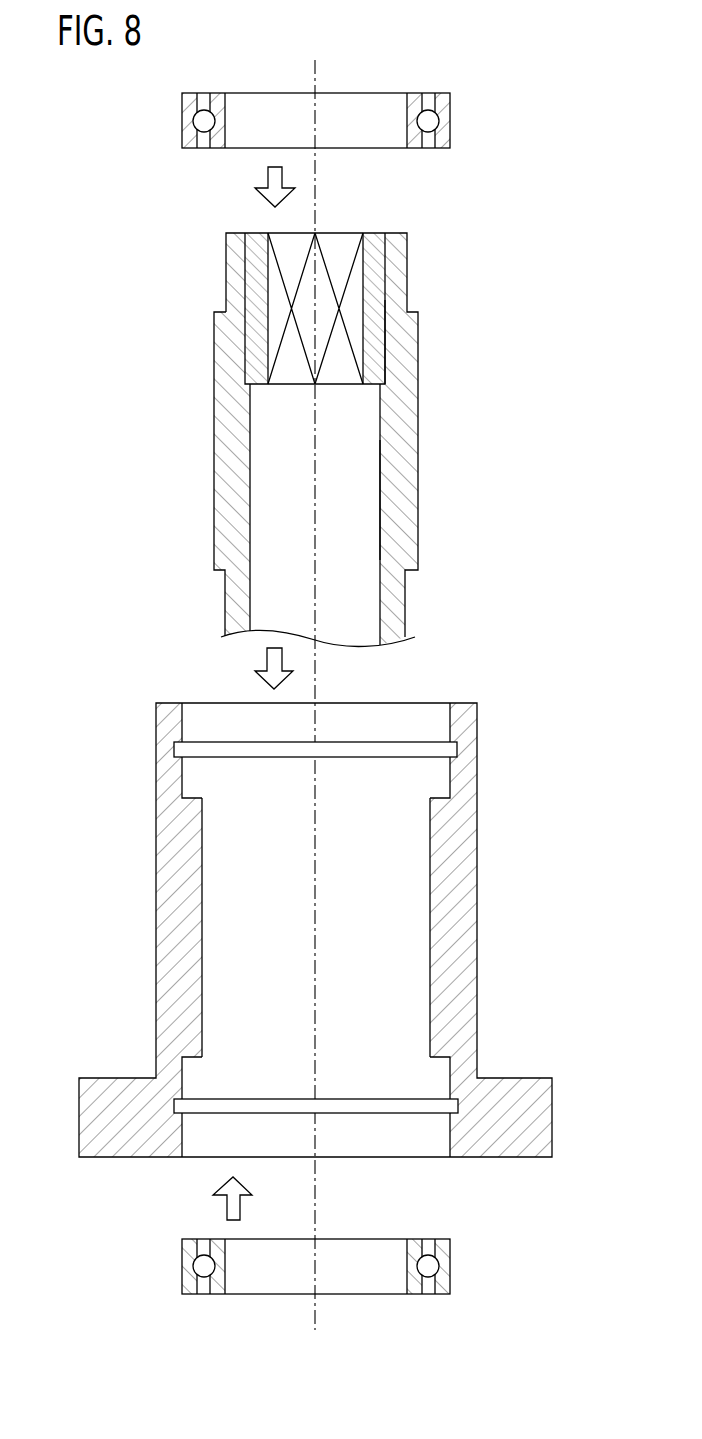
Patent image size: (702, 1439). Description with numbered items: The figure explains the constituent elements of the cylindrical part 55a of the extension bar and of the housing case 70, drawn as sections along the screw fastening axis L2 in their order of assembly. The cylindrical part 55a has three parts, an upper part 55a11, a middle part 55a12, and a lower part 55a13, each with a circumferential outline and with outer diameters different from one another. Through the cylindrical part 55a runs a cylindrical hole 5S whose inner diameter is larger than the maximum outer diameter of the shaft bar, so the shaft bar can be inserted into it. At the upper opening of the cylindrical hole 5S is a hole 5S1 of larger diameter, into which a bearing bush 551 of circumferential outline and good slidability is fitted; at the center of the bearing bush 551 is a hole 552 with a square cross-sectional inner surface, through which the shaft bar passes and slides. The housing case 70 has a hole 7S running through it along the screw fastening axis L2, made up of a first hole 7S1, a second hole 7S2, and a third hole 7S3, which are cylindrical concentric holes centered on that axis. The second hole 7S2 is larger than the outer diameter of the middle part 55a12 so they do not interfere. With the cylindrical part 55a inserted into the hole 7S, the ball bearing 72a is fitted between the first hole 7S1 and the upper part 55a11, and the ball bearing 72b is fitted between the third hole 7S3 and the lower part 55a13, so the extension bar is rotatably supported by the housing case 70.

The screw fastening axis L2 is at (317, 677).
The ball bearing 72a is at (452, 119).
The ball bearing 72b is at (454, 1265).
The cylindrical part 55a is at (316, 416).
The upper part 55a11 is at (396, 258).
The middle part 55a12 is at (414, 432).
The lower part 55a13 is at (398, 593).
The bearing bush 551 is at (374, 234).
The hole 552 is at (262, 294).
The hole 5S1 is at (386, 357).
The cylindrical hole 5S is at (376, 500).
The housing case 70 is at (316, 901).
The hole 7S is at (362, 901).
The first hole 7S1 is at (430, 727).
The second hole 7S2 is at (410, 885).
The third hole 7S3 is at (428, 1074).